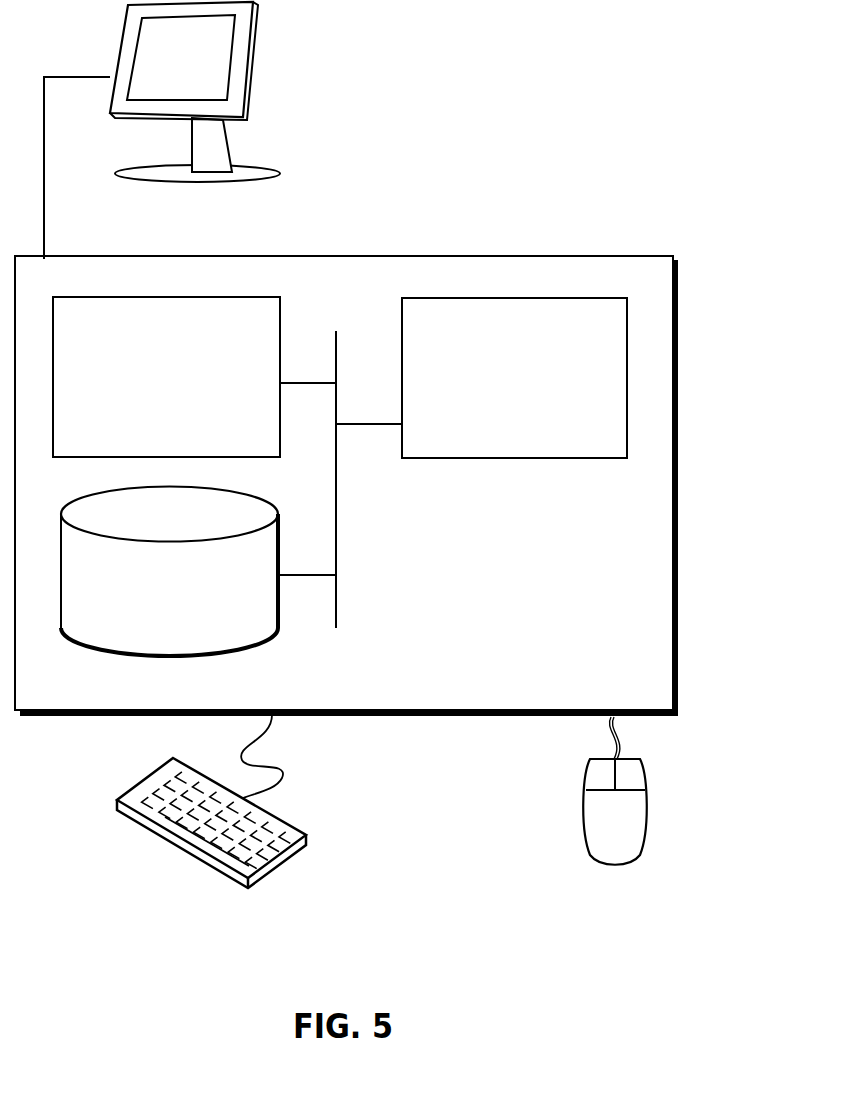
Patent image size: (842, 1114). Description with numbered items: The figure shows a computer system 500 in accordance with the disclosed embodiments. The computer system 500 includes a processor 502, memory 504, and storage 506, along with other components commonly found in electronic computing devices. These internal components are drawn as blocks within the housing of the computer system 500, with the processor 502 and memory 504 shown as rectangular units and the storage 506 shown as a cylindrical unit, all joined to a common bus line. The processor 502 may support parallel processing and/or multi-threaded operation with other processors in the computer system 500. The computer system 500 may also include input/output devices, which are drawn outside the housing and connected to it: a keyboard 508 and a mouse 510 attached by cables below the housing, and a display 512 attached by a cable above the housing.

The computer system 500 is at (390, 235).
The processor 502 is at (539, 391).
The memory 504 is at (189, 390).
The storage 506 is at (194, 602).
The keyboard 508 is at (137, 824).
The mouse 510 is at (635, 831).
The display 512 is at (162, 130).